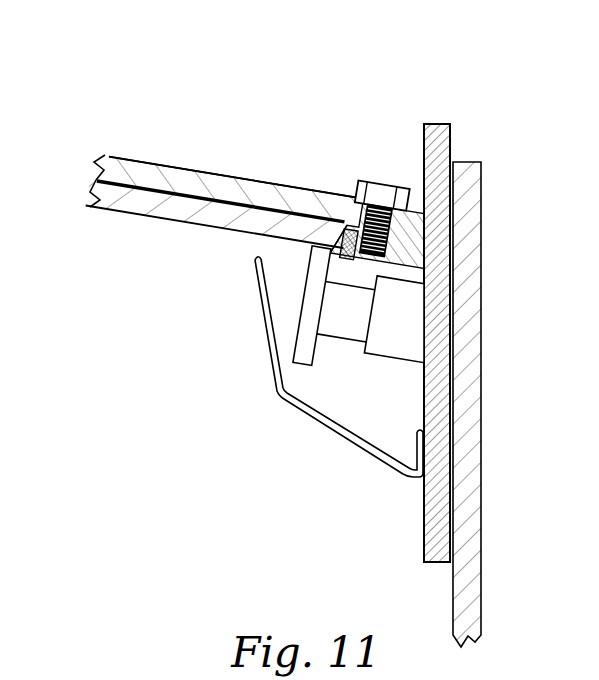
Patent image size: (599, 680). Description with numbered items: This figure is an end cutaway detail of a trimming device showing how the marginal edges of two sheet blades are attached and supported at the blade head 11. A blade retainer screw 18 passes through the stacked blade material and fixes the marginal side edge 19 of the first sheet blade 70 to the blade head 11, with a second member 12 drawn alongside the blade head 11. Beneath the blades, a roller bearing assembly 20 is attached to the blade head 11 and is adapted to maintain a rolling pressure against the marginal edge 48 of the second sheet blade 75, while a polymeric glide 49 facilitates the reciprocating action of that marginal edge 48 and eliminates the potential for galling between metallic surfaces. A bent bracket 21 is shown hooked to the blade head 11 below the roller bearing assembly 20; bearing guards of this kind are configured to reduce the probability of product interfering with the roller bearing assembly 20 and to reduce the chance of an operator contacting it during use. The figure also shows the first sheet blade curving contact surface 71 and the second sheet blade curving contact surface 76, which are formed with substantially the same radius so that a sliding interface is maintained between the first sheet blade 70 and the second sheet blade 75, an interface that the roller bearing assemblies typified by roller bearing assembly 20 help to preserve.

The blade head 11 is at (438, 138).
The second wall 12 is at (477, 218).
The blade retainer screw 18 is at (378, 205).
The marginal side edge 19 is at (417, 216).
The roller bearing assembly 20 is at (310, 315).
The hook bracket 21 is at (292, 405).
The marginal edge 48 is at (310, 243).
The polymeric glide 49 is at (349, 226).
The first sheet blade 70 is at (198, 182).
The first sheet blade curving contact surface 71 is at (136, 188).
The second sheet blade 75 is at (168, 210).
The second sheet blade curving contact surface 76 is at (120, 182).